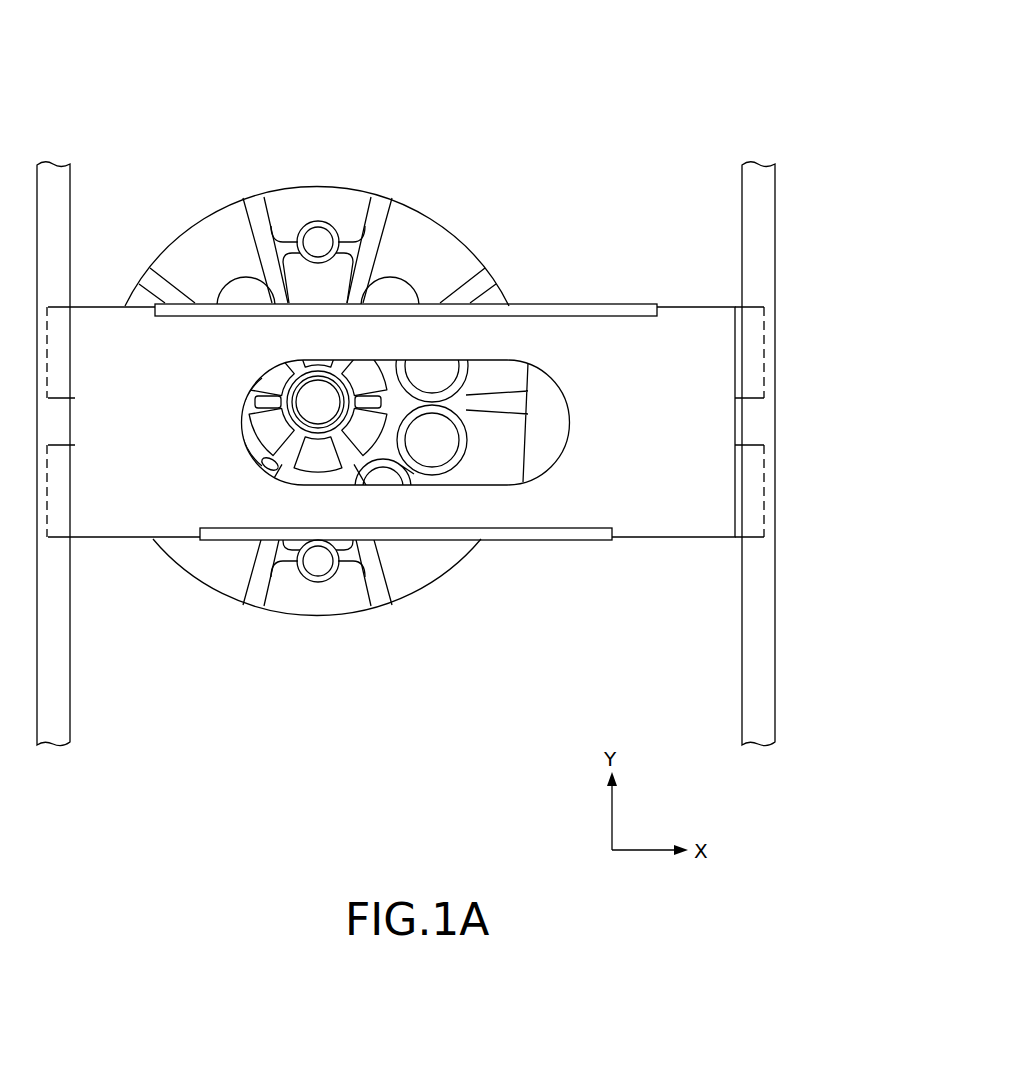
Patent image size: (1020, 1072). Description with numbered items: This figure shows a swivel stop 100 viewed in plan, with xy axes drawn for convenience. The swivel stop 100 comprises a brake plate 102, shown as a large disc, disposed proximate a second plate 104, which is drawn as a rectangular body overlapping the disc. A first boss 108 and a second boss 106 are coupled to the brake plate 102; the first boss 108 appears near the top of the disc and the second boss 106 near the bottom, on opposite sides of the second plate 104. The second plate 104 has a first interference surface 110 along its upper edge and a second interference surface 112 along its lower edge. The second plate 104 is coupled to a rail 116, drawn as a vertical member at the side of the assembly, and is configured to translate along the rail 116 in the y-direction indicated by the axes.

The swivel stop 100 is at (645, 70).
The brake plate 102 is at (448, 257).
The second plate 104 is at (661, 488).
The second boss 106 is at (322, 568).
The first boss 108 is at (322, 240).
The first interference surface 110 is at (543, 302).
The second interference surface 112 is at (518, 541).
The rail 116 is at (763, 370).